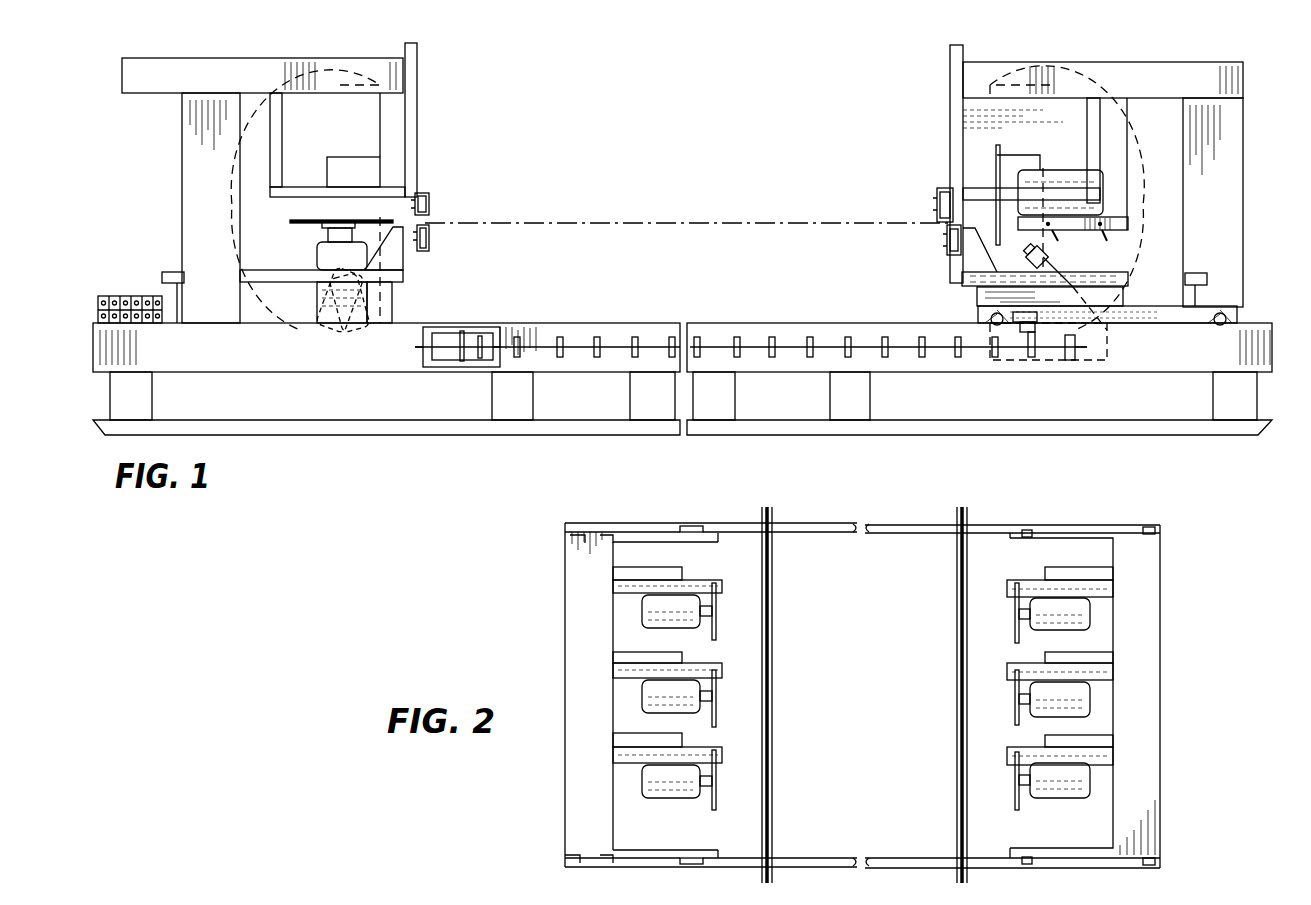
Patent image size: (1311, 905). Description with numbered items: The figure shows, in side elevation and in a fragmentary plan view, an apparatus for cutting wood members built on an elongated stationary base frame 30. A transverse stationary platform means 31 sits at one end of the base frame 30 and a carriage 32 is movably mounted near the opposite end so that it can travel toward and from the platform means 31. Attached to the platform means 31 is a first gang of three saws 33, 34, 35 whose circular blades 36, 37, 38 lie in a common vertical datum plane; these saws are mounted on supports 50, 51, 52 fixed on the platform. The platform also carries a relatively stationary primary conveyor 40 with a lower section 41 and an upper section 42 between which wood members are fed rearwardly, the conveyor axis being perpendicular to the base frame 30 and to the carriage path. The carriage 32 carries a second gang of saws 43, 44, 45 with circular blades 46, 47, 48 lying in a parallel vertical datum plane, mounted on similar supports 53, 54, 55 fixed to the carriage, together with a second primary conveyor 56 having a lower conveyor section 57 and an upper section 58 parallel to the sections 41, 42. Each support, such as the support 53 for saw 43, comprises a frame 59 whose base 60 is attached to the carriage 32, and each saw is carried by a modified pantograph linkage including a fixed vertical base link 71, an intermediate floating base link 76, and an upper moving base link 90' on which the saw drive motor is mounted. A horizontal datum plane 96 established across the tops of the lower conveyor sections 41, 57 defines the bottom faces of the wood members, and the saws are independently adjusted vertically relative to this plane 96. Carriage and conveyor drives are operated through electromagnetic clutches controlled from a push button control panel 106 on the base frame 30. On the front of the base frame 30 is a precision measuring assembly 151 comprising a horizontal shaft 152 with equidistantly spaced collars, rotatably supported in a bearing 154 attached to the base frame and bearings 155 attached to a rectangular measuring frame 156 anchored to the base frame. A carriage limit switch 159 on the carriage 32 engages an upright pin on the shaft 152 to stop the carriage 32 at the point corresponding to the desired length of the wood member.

In FIG. 1, the base frame 30 is at (228, 348).
In FIG. 2, the base frame 30 is at (1098, 520).
In FIG. 1, the stationary platform means 31 is at (265, 284).
In FIG. 2, the stationary platform means 31 is at (590, 607).
In FIG. 1, the carriage 32 is at (1145, 300).
In FIG. 2, the carriage 32 is at (1135, 612).
In FIG. 2, the saw 33 is at (682, 608).
In FIG. 2, the saw 34 is at (665, 692).
In FIG. 1, the saw 35 is at (338, 157).
In FIG. 2, the saw 35 is at (668, 776).
In FIG. 2, the circular blade 36 is at (716, 622).
In FIG. 2, the circular blade 37 is at (716, 710).
In FIG. 1, the circular blade 38 is at (306, 216).
In FIG. 2, the circular blade 38 is at (716, 800).
In FIG. 1, the primary conveyor 40 is at (440, 200).
In FIG. 2, the primary conveyor 40 is at (780, 698).
In FIG. 1, the lower conveyor section 41 is at (430, 235).
In FIG. 1, the upper conveyor section 42 is at (428, 193).
In FIG. 2, the upper conveyor section 42 is at (772, 610).
In FIG. 1, the saw 43 is at (1062, 170).
In FIG. 2, the saw 43 is at (1065, 788).
In FIG. 2, the saw 44 is at (1085, 696).
In FIG. 2, the saw 45 is at (1085, 618).
In FIG. 1, the circular blade 46 is at (996, 168).
In FIG. 2, the circular blade 46 is at (1015, 795).
In FIG. 2, the circular blade 47 is at (1015, 705).
In FIG. 2, the circular blade 48 is at (1015, 622).
In FIG. 2, the saw support 50 is at (633, 575).
In FIG. 2, the saw support 51 is at (633, 668).
In FIG. 1, the saw support 52 is at (272, 245).
In FIG. 2, the saw support 52 is at (622, 755).
In FIG. 1, the saw support 53 is at (1108, 265).
In FIG. 2, the saw support 53 is at (1100, 758).
In FIG. 2, the saw support 54 is at (1105, 673).
In FIG. 2, the saw support 55 is at (1105, 590).
In FIG. 1, the primary conveyor 56 is at (933, 203).
In FIG. 2, the primary conveyor 56 is at (955, 715).
In FIG. 1, the lower conveyor section 57 is at (947, 242).
In FIG. 1, the upper conveyor section 58 is at (937, 190).
In FIG. 2, the upper conveyor section 58 is at (957, 598).
In FIG. 1, the frame 59 is at (1172, 138).
In FIG. 1, the base 60 is at (1098, 273).
In FIG. 1, the vertical base link 71 is at (977, 296).
In FIG. 1, the intermediate floating base link 76 is at (1070, 272).
In FIG. 1, the upper moving base link 90' is at (1129, 197).
In FIG. 1, the horizontal datum plane 96 is at (714, 220).
In FIG. 1, the push button control panel 106 is at (112, 294).
In FIG. 1, the measuring assembly 151 is at (612, 339).
In FIG. 1, the shaft 152 is at (818, 338).
In FIG. 1, the bearing 154 is at (1077, 355).
In FIG. 1, the bearing 155 is at (430, 348).
In FIG. 1, the measuring frame 156 is at (483, 333).
In FIG. 1, the carriage limit switch 159 is at (1022, 338).